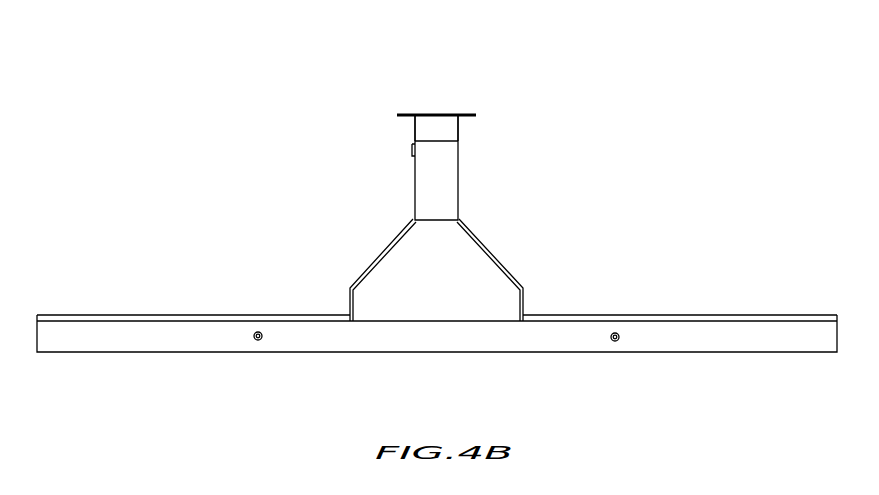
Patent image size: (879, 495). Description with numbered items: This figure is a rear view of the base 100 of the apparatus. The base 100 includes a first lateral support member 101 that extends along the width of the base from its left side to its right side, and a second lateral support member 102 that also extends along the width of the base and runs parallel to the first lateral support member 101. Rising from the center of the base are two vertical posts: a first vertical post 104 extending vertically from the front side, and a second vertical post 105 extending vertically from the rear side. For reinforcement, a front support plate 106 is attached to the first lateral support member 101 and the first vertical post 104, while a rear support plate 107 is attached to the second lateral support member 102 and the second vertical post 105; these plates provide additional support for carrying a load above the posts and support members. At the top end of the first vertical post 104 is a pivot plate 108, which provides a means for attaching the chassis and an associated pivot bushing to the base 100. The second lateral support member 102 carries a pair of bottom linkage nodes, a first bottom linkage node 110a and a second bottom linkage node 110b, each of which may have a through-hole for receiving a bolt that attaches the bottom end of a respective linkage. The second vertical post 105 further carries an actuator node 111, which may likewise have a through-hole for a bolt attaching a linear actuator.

The base 100 is at (658, 68).
The first lateral support member 101 is at (694, 318).
The second lateral support member 102 is at (727, 337).
The first vertical post 104 is at (452, 132).
The second vertical post 105 is at (448, 187).
The front support plate 106 is at (375, 255).
The rear support plate 107 is at (510, 303).
The pivot plate 108 is at (408, 113).
The first bottom linkage node 110a is at (258, 340).
The second bottom linkage node 110b is at (615, 342).
The actuator node 111 is at (459, 150).